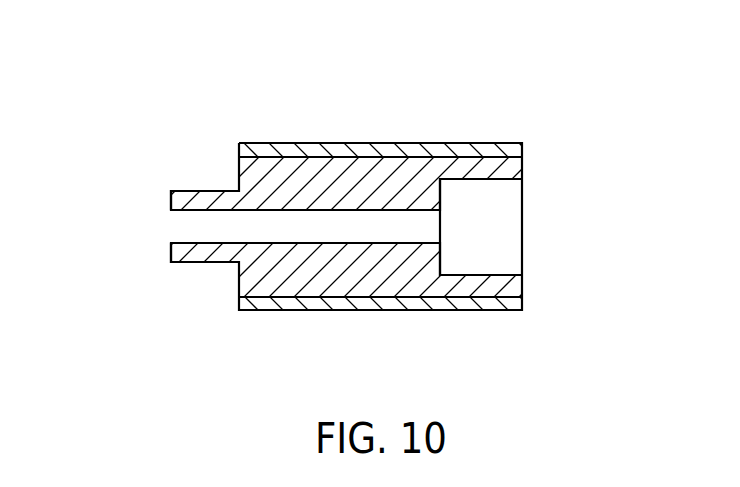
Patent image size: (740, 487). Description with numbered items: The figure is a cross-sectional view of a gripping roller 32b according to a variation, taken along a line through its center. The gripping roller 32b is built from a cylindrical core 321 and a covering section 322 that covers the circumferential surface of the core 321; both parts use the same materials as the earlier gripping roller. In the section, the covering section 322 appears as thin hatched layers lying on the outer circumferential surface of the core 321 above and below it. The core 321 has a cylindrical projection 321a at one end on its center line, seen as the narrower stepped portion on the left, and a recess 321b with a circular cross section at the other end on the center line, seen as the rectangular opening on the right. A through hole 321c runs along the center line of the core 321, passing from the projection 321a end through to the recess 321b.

The gripping roller 32b is at (352, 187).
The core 321 is at (518, 282).
The cylindrical projection 321a is at (197, 257).
The recess 321b is at (517, 203).
The through hole 321c is at (177, 227).
The covering section 322 is at (520, 310).